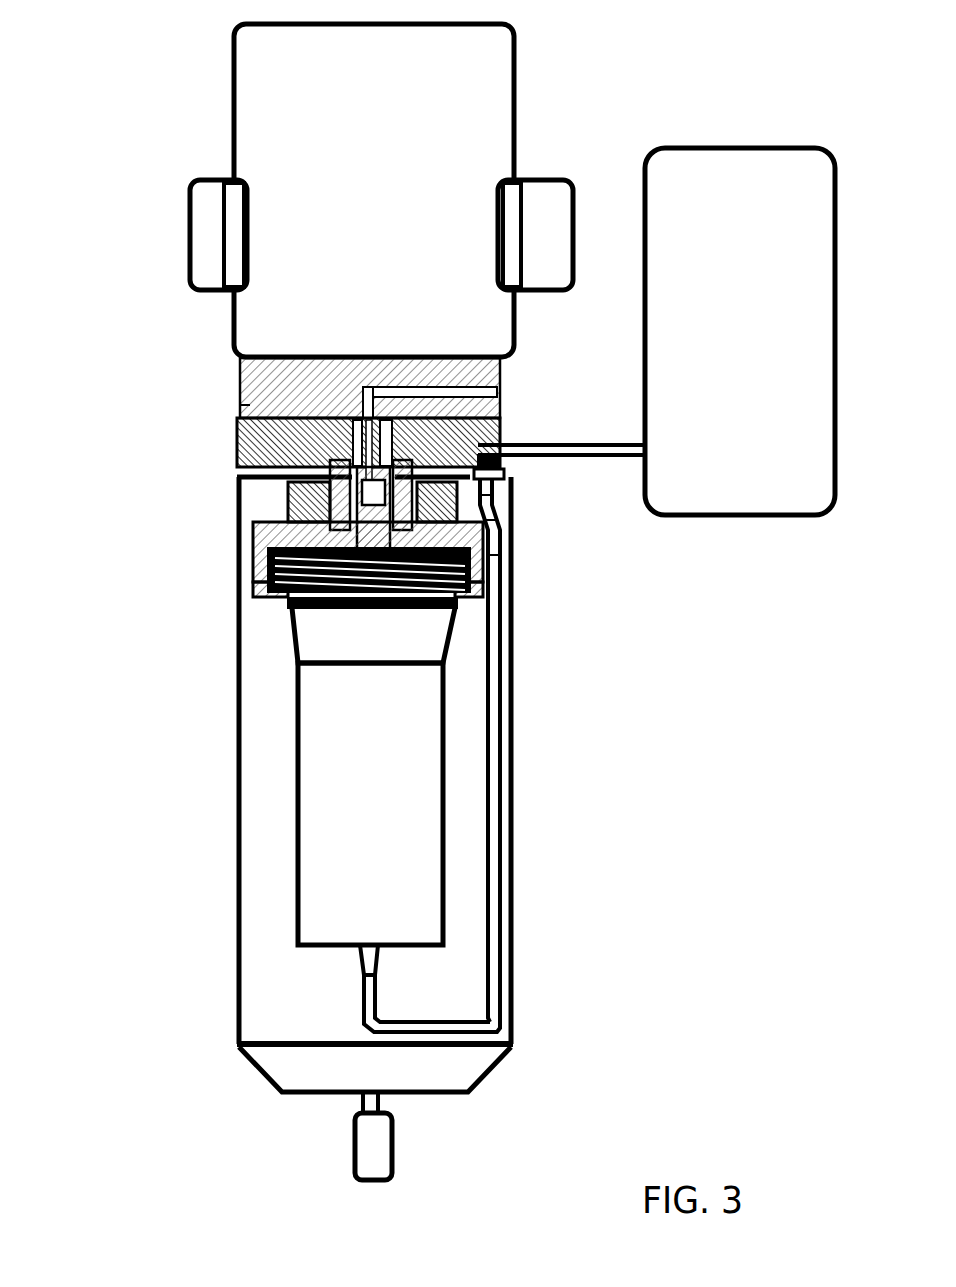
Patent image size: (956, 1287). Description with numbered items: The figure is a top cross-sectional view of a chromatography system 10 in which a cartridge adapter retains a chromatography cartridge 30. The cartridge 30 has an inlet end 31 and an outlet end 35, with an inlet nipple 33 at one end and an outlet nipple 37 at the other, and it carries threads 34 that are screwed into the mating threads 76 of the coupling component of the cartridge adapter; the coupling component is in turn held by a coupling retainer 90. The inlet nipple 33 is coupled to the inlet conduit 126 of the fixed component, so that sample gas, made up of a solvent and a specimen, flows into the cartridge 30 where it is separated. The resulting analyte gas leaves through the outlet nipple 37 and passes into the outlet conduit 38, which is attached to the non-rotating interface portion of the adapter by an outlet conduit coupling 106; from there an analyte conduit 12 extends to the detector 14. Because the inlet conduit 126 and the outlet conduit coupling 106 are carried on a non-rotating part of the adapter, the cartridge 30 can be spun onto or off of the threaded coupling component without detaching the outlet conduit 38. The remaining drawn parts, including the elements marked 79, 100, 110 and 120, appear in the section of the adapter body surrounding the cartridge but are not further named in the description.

The chromatography system 10 is at (157, 287).
The analyte conduit 12 is at (604, 445).
The detector 14 is at (678, 180).
The chromatography cartridge 30 is at (323, 778).
The inlet end 31 is at (262, 515).
The inlet nipple 33 is at (290, 520).
The threads 34 is at (252, 577).
The outlet end 35 is at (298, 943).
The outlet nipple 37 is at (365, 958).
The outlet conduit 38 is at (500, 673).
The threads of the first cartridge adapter 76 is at (500, 557).
The connector 79 is at (500, 534).
The coupling retainer 90 is at (492, 515).
The manifold block 100 is at (500, 437).
The outlet conduit coupling 106 is at (503, 470).
The housing cap 110 is at (238, 468).
The upper block 120 is at (500, 383).
The inlet conduit 126 is at (300, 415).